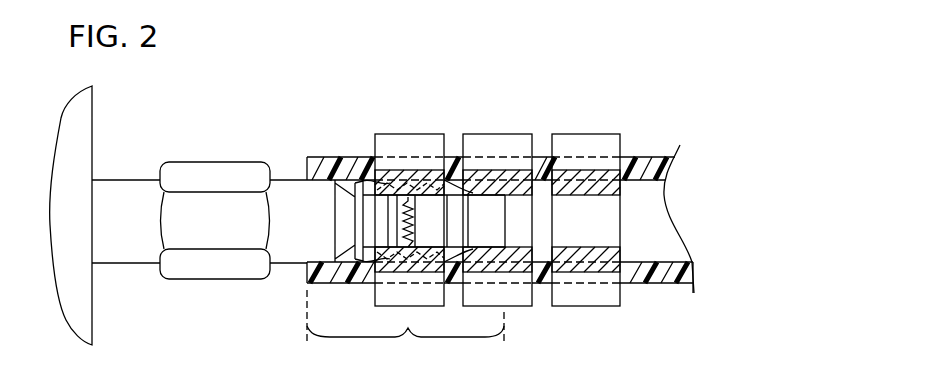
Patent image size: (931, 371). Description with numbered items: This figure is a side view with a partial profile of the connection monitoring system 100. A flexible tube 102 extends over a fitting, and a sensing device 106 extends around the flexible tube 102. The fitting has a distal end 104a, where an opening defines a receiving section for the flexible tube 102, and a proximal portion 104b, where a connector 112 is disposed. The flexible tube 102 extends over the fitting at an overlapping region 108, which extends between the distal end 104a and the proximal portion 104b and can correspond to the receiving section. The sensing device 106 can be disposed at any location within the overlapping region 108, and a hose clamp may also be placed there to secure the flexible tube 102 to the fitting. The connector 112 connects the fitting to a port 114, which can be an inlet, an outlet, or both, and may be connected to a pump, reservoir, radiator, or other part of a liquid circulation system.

The connection monitoring system 100 is at (637, 86).
The flexible tube 102 is at (650, 283).
The distal end 104a is at (505, 217).
The proximal portion 104b is at (291, 180).
The sensing device 106 is at (402, 134).
The overlapping region 108 is at (405, 326).
The connector 112 is at (234, 162).
The port 114 is at (117, 180).